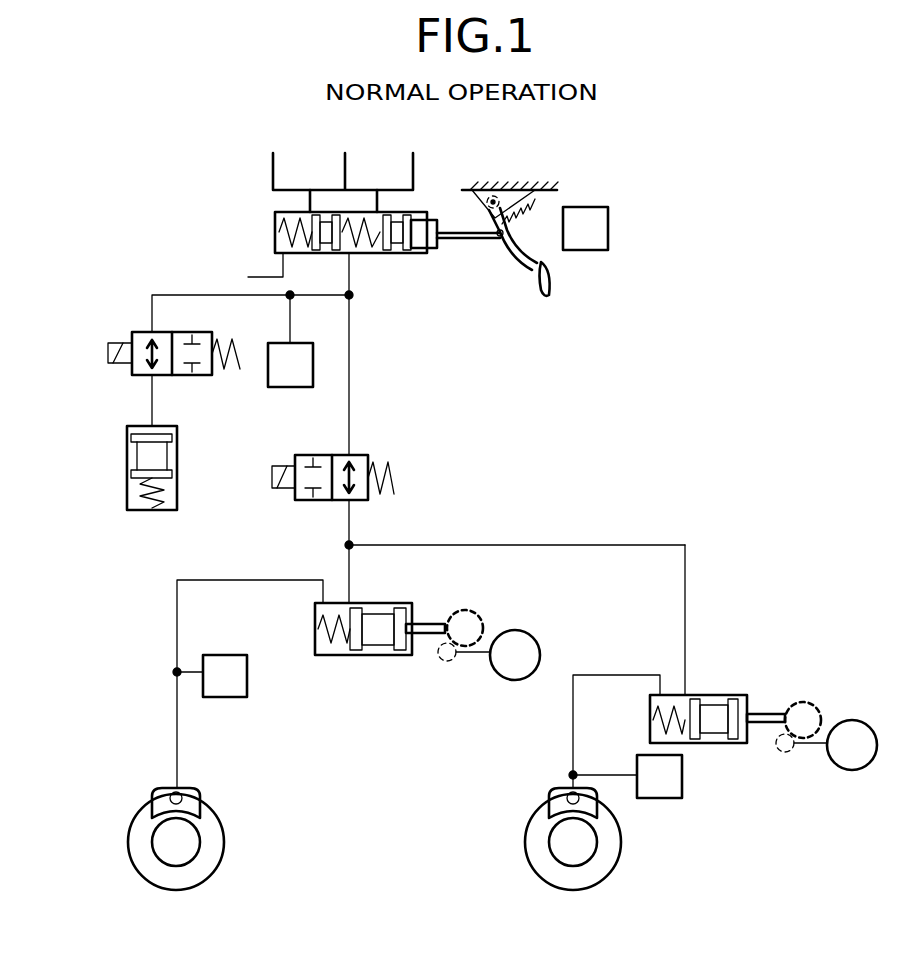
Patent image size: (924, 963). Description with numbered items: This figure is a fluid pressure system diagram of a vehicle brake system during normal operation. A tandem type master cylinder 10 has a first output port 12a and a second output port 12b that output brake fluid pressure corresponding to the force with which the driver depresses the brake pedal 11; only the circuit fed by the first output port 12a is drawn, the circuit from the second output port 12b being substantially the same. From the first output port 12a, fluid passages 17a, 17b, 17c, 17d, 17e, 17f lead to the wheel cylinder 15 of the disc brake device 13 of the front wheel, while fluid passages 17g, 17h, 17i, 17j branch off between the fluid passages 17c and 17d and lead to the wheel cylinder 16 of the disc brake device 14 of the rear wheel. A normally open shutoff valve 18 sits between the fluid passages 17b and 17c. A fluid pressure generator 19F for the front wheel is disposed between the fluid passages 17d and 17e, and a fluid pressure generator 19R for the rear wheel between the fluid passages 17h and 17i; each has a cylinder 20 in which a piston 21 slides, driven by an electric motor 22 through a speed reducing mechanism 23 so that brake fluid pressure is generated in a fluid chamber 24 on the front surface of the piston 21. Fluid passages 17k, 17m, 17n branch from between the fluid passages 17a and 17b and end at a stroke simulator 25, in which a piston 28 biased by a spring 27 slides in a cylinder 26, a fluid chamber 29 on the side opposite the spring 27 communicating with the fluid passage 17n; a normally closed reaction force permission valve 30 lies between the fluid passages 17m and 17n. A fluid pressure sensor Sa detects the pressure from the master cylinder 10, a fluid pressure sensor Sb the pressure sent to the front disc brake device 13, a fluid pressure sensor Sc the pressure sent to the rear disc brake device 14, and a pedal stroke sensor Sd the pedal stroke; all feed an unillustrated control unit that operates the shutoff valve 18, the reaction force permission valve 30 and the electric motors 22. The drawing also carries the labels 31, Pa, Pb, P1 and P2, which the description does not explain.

The master cylinder 10 is at (272, 232).
The brake pedal 11 is at (520, 275).
The first output port 12a is at (353, 257).
The second output port 12b is at (287, 256).
The disc brake device 13 is at (205, 800).
The disc brake device 14 is at (535, 805).
The wheel cylinder 15 is at (158, 790).
The wheel cylinder 16 is at (598, 795).
The fluid passage 17a is at (352, 285).
The fluid passage 17b is at (352, 376).
The fluid passage 17c is at (352, 527).
The fluid passage 17d is at (352, 565).
The fluid passage 17e is at (258, 578).
The fluid passage 17f is at (178, 735).
The fluid passage 17g is at (458, 546).
The fluid passage 17h is at (687, 588).
The fluid passage 17i is at (571, 703).
The fluid passage 17j is at (570, 785).
The fluid passage 17k is at (318, 297).
The fluid passage 17m is at (252, 289).
The fluid passage 17n is at (154, 412).
The shutoff valve 18 is at (358, 455).
The fluid pressure generator 19F is at (528, 688).
The fluid pressure generator 19R is at (742, 755).
The cylinder 20 is at (337, 603).
The piston 21 is at (378, 656).
The electric motor 22 is at (538, 640).
The speed reducing mechanism 23 is at (477, 611).
The fluid chamber 24 is at (327, 650).
The stroke simulator 25 is at (137, 495).
The cylinder 26 is at (178, 483).
The spring 27 is at (160, 498).
The piston 28 is at (160, 452).
The fluid chamber 29 is at (133, 433).
The reaction force permission valve 30 is at (173, 332).
The reservoir 31 is at (413, 170).
The pressure chamber Pa is at (377, 210).
The pressure chamber Pb is at (310, 210).
The first pressure chamber P1 is at (353, 603).
The second pressure chamber P2 is at (320, 600).
The fluid pressure sensor Sa is at (290, 365).
The fluid pressure sensor Sb is at (210, 676).
The fluid pressure sensor Sc is at (625, 776).
The pedal stroke sensor Sd is at (585, 228).